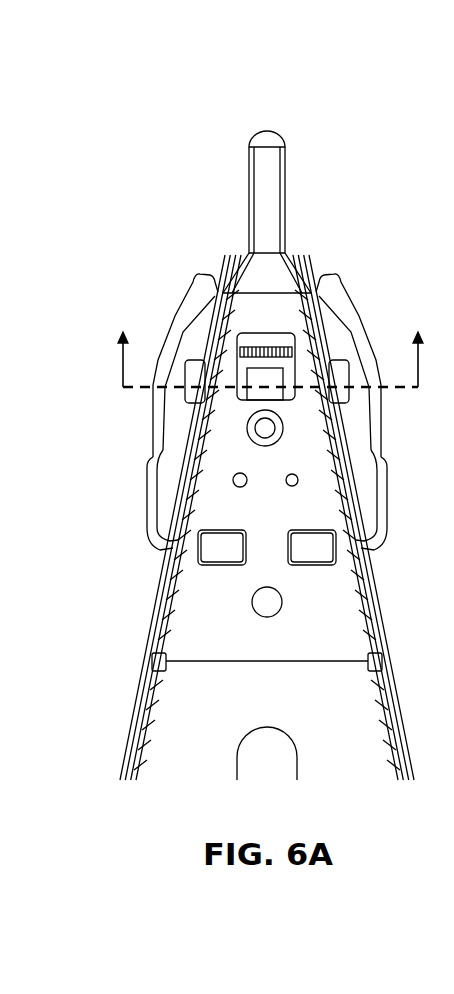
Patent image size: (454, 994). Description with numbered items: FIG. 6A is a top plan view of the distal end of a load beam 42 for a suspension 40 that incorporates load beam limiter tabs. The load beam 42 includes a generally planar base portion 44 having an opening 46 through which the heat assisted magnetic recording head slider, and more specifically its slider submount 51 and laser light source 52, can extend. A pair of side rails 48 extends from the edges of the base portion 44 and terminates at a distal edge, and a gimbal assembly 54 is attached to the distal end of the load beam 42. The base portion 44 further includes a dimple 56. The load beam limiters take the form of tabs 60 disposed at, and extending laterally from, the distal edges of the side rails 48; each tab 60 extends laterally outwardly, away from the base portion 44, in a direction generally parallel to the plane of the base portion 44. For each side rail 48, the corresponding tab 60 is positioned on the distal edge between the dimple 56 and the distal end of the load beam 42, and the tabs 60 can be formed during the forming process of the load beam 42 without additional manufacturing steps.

The suspension 40 is at (144, 128).
The load beam 42 is at (118, 750).
The base portion 44 is at (287, 516).
The opening 46 is at (253, 332).
The side rails 48 is at (153, 626).
The slider submount 51 is at (262, 384).
The laser light source 52 is at (272, 358).
The gimbal assembly 54 is at (143, 532).
The dimple 56 is at (283, 430).
The tabs 60 is at (186, 398).